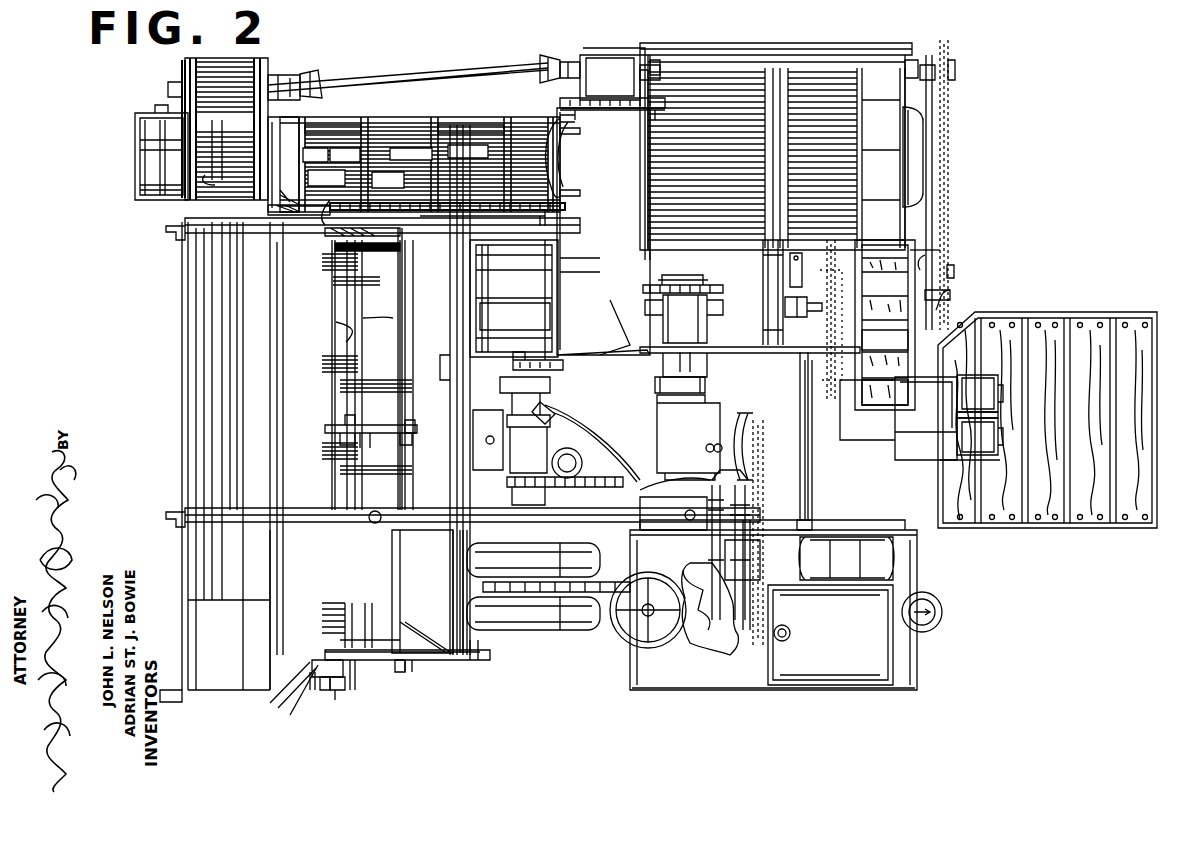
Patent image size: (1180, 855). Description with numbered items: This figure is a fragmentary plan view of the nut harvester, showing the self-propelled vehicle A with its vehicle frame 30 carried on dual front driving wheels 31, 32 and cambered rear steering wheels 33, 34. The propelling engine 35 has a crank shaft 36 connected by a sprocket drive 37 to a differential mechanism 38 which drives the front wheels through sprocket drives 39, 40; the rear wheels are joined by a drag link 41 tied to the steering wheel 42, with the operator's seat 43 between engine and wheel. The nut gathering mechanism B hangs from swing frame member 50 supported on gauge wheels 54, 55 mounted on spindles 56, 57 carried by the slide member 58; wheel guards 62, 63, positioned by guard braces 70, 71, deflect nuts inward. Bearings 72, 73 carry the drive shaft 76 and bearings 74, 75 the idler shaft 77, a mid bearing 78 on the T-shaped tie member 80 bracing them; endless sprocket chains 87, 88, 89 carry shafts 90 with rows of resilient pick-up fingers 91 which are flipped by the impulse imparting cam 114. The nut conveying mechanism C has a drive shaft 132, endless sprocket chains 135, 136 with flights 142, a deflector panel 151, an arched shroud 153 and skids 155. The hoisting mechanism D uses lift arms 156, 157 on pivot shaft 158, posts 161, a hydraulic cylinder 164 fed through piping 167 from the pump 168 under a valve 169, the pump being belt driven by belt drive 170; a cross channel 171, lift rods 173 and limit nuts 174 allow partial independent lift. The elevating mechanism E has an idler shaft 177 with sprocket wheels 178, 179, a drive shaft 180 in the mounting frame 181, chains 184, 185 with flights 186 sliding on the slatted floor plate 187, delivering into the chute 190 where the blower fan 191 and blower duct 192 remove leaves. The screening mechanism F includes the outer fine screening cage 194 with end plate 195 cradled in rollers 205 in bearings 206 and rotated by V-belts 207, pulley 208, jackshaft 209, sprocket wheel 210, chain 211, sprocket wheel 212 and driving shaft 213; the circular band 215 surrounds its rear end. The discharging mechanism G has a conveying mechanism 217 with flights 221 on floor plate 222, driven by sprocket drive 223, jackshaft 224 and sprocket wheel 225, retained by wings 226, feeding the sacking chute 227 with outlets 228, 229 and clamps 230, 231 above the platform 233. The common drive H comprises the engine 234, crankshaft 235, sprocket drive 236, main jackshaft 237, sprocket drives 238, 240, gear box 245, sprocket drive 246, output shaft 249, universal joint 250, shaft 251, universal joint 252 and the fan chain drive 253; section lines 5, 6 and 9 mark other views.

The vehicle frame 30 is at (922, 558).
The front driving wheel 31 is at (517, 595).
The front driving wheel 32 is at (505, 271).
The rear steering wheel 33 is at (895, 555).
The rear steering wheel 34 is at (805, 346).
The vehicle propelling engine 35 is at (848, 637).
The crank shaft 36 is at (750, 625).
The sprocket drive 37 is at (762, 512).
The differential mechanism 38 is at (702, 437).
The sprocket drive 39 is at (622, 588).
The sprocket drive 40 is at (655, 280).
The drag link 41 is at (805, 463).
The vehicle steering wheel 42 is at (648, 648).
The seat 43 is at (718, 624).
The swing frame member 50 is at (468, 661).
The gauge wheel 54 is at (345, 685).
The gauge wheel 55 is at (288, 240).
The spindle 56 is at (330, 678).
The spindle 57 is at (330, 207).
The slide member 58 is at (314, 681).
The wheel guard 62 is at (280, 700).
The wheel guard 63 is at (288, 376).
The guard brace 70 is at (305, 690).
The guard brace 71 is at (315, 155).
The bearing 72 is at (358, 672).
The bearing 73 is at (345, 195).
The bearing 74 is at (400, 666).
The bearing 75 is at (468, 151).
The drive shaft 76 is at (350, 325).
The idler shaft 77 is at (410, 678).
The bearing 78 is at (340, 438).
The T-shaped tie member 80 is at (375, 436).
The endless sprocket chain 87 is at (385, 630).
The endless sprocket chain 88 is at (386, 253).
The endless sprocket chain 89 is at (382, 425).
The shaft 90 is at (395, 311).
The nut pick-up finger 91 is at (342, 272).
The impulse imparting cam 114 is at (363, 636).
The drive shaft 132 is at (275, 82).
The endless sprocket chain 135 is at (186, 70).
The endless sprocket chain 136 is at (260, 60).
The nut conveying flight 142 is at (242, 140).
The angular nut deflector panel 151 is at (280, 585).
The arched shroud 153 is at (205, 495).
The skid 155 is at (168, 92).
The lift arm 156 is at (258, 520).
The lift arm 157 is at (190, 243).
The pivot shaft 158 is at (640, 450).
The post 161 is at (166, 229).
The hydraulic cylinder 164 is at (470, 370).
The piping 167 is at (640, 500).
The pump 168 is at (712, 550).
The manually controlled valve 169 is at (735, 425).
The belt drive 170 is at (697, 600).
The cross channel 171 is at (395, 565).
The lift rod 173 is at (380, 225).
The limit nut 174 is at (372, 210).
The idler shaft 177 is at (162, 157).
The idler sprocket wheel 178 is at (163, 188).
The idler sprocket wheel 179 is at (178, 136).
The drive shaft 180 is at (560, 116).
The elevating mechanism mounting frame 181 is at (575, 133).
The endless sprocket chain 184 is at (275, 205).
The endless sprocket chain 185 is at (300, 117).
The nut conveying flight 186 is at (338, 140).
The slatted floor plate 187 is at (408, 138).
The chute 190 is at (566, 168).
The blower fan 191 is at (605, 333).
The blower duct 192 is at (620, 240).
The outer fine screening cage 194 is at (713, 90).
The annular end plate 195 is at (655, 83).
The roller 205 is at (654, 68).
The bearing 206 is at (652, 60).
The V-belt 207 is at (780, 257).
The double V-belt pulley 208 is at (788, 325).
The jackshaft 209 is at (950, 295).
The sprocket wheel 210 is at (1033, 304).
The endless sprocket chain 211 is at (950, 208).
The sprocket wheel 212 is at (948, 64).
The driving shaft 213 is at (953, 72).
The circular band 215 is at (890, 177).
The conveying mechanism 217 is at (925, 251).
The nut and debris conveying flight 221 is at (875, 345).
The floor plate 222 is at (868, 375).
The sprocket drive 223 is at (825, 378).
The jackshaft 224 is at (925, 261).
The sprocket wheel 225 is at (947, 270).
The wing 226 is at (885, 325).
The sacking chute 227 is at (942, 442).
The sack receiving outlet 228 is at (945, 462).
The sack receiving outlet 229 is at (950, 383).
The clamp 230 is at (997, 438).
The clamp 231 is at (995, 406).
The platform 233 is at (1095, 522).
The harvesting mechanism engine 234 is at (540, 450).
The engine crankshaft 235 is at (526, 363).
The sprocket drive 236 is at (555, 368).
The main jackshaft 237 is at (545, 270).
The sprocket drive 238 is at (507, 212).
The sprocket drive 240 is at (395, 190).
The gear box 245 is at (606, 55).
The sprocket drive 246 is at (565, 97).
The power output shaft 249 is at (572, 60).
The universal joint 250 is at (550, 58).
The shaft 251 is at (470, 60).
The universal joint 252 is at (338, 75).
The chain drive 253 is at (585, 487).
The section line 5 is at (310, 645).
The section line 6 is at (305, 618).
The section line 9 is at (172, 452).
The self-propelled vehicle A is at (566, 642).
The nut gathering mechanism B is at (388, 668).
The nut conveying mechanism C is at (178, 368).
The hoisting mechanism D is at (332, 525).
The nut elevating mechanism E is at (398, 110).
The nut cleaning and screening mechanism F is at (940, 133).
The nut discharging mechanism G is at (898, 430).
The common drive H is at (572, 343).